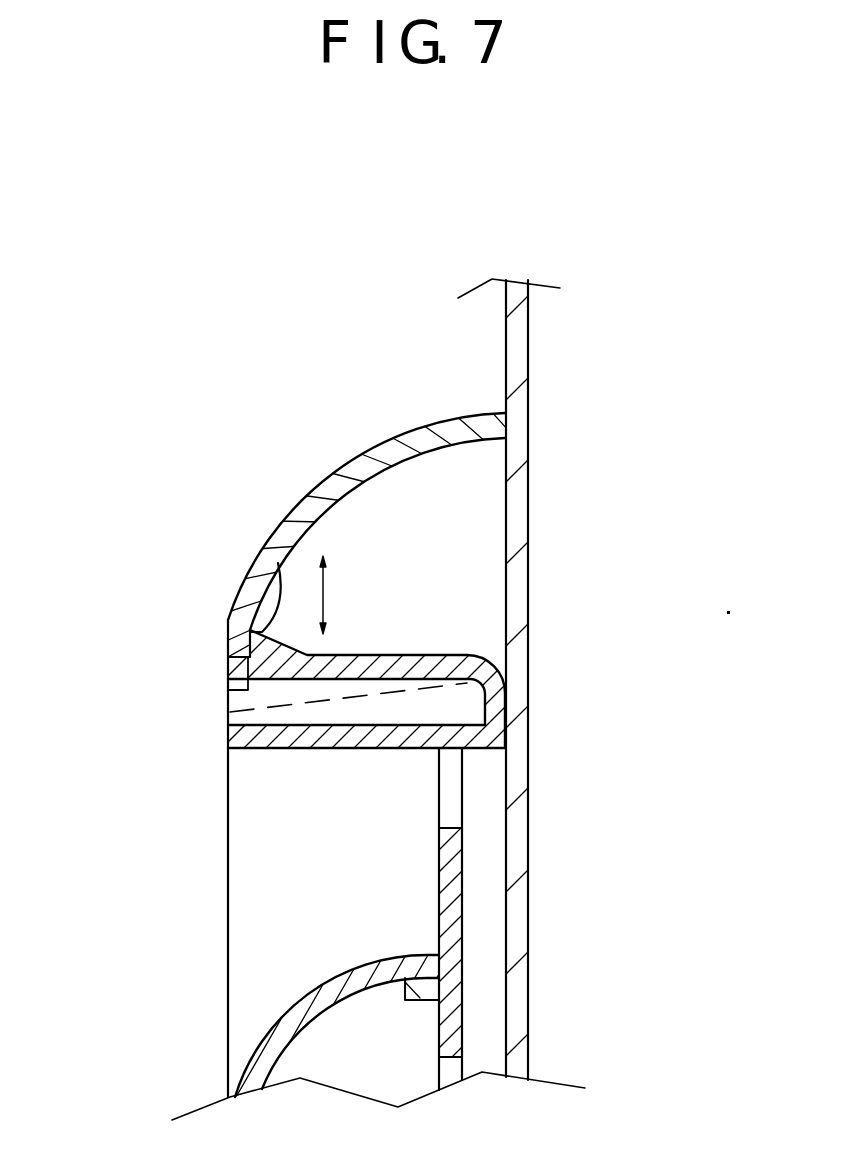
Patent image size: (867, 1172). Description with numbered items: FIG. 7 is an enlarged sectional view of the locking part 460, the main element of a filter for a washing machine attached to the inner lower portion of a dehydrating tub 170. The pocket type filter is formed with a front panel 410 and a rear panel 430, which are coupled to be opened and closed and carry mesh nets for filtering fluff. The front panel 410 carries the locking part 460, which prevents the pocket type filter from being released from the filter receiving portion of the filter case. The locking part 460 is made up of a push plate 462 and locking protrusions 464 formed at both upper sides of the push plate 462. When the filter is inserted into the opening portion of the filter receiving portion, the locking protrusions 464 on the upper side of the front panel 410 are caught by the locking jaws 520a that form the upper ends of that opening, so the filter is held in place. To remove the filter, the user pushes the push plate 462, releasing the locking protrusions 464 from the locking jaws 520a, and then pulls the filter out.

The dehydrating tub 170 is at (517, 502).
The locking part 460 is at (298, 506).
The push plate 462 is at (400, 664).
The locking protrusions 464 is at (278, 563).
The locking jaws 520a is at (235, 642).
The front panel 410 is at (273, 1047).
The rear panel 430 is at (450, 1023).